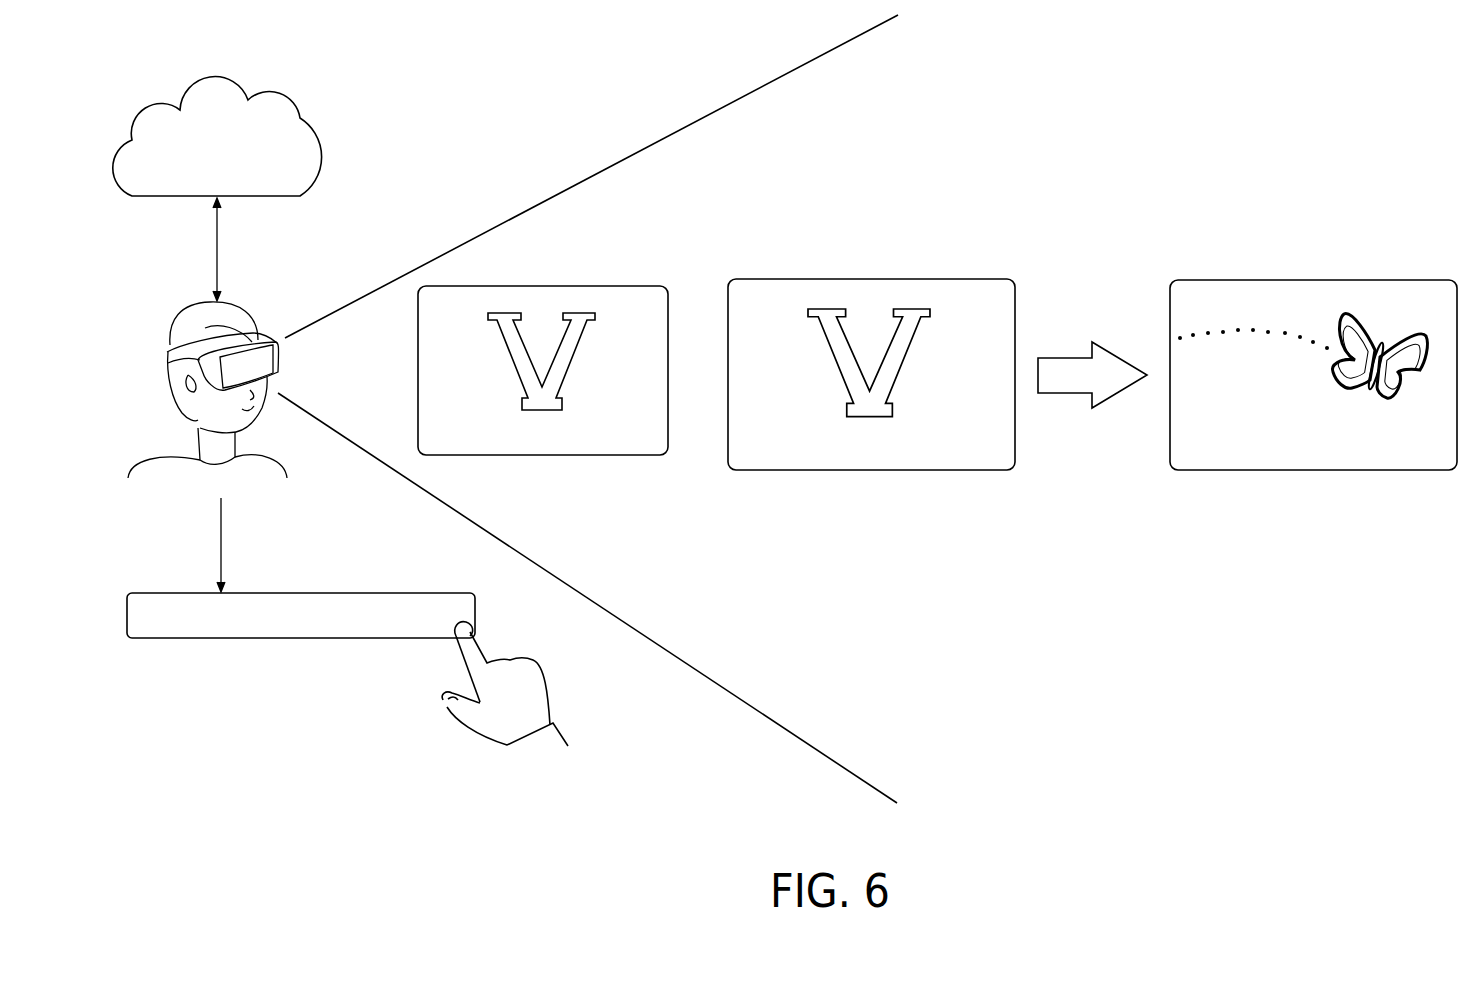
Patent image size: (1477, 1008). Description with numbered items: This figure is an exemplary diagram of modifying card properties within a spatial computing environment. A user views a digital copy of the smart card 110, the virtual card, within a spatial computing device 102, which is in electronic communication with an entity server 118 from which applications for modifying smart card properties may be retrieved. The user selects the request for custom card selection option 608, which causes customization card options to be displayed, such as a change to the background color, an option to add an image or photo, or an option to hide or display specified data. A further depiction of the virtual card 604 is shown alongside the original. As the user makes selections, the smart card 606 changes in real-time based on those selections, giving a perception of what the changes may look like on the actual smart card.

The entity server 118 is at (222, 77).
The spatial computing device 102 is at (277, 361).
The smart card 110 is at (525, 288).
The enlarged virtual card 604 is at (885, 282).
The smart card 606 is at (1302, 282).
The request for custom card selection option 608 is at (295, 593).